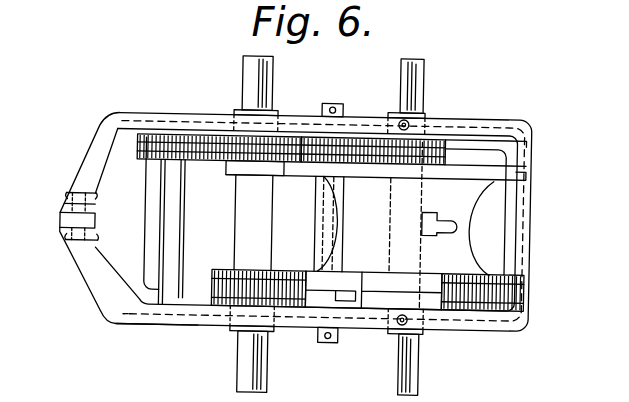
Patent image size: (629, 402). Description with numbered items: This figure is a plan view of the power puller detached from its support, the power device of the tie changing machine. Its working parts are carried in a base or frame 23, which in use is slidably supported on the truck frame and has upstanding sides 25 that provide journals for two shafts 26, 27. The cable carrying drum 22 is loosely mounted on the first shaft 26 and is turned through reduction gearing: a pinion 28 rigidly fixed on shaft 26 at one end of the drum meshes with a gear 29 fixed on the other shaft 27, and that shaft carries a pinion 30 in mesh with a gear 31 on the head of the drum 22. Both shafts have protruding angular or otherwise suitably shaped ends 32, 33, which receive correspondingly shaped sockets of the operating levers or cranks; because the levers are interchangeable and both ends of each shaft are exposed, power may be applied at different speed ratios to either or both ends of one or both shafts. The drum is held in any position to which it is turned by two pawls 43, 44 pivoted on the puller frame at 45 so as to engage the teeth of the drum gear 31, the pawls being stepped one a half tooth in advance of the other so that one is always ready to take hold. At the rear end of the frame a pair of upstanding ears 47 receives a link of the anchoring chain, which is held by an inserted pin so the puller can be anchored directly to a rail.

The cable carrying drum 22 is at (462, 202).
The base or frame 23 is at (481, 127).
The upstanding sides 25 is at (157, 325).
The shaft 26 is at (424, 330).
The shaft 27 is at (239, 331).
The pinion 28 is at (432, 147).
The gear 29 is at (188, 138).
The pinion 30 is at (224, 269).
The gear 31 is at (502, 294).
The shaft end 32 is at (415, 65).
The shaft end 33 is at (259, 81).
The pawl 43 is at (416, 295).
The pawl 44 is at (426, 281).
The pivot 45 is at (320, 330).
The upstanding ears 47 is at (67, 237).